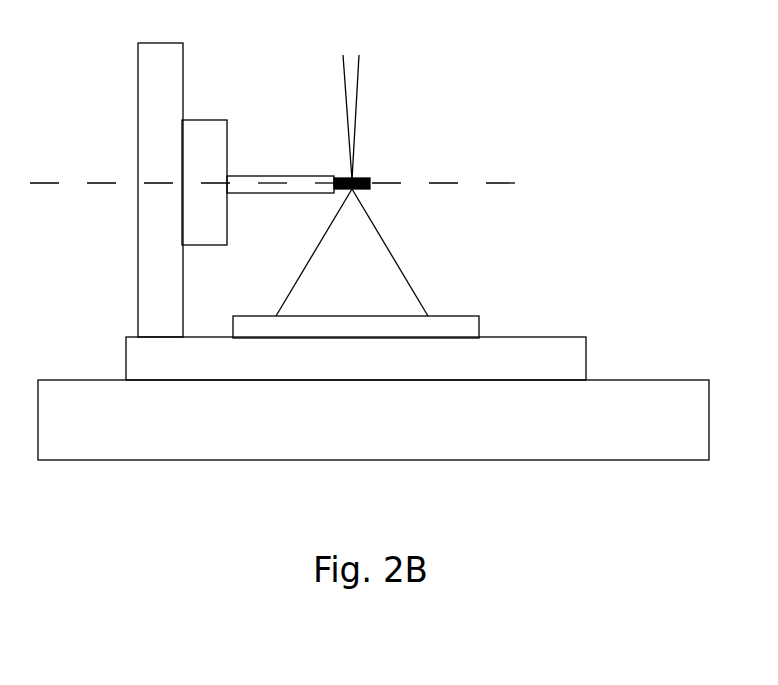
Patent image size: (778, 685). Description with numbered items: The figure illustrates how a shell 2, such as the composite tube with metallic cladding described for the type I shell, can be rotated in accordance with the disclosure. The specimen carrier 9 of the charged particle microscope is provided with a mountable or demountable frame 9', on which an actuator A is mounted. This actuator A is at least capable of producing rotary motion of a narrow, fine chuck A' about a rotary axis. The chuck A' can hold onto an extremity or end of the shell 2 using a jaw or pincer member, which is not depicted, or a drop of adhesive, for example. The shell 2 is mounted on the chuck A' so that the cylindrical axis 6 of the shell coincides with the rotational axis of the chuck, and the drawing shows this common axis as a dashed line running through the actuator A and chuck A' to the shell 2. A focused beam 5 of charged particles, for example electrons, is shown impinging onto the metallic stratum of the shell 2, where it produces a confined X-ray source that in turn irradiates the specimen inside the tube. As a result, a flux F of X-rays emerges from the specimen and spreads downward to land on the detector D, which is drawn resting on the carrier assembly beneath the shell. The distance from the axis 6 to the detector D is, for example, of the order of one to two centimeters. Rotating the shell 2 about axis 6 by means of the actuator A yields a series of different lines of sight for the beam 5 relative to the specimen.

The frame 9' is at (319, 211).
The specimen carrier 9 is at (373, 381).
The detector D is at (458, 321).
The actuator A is at (214, 152).
The chuck A' is at (280, 140).
The cylindrical axis 6 is at (495, 181).
The shell 2 is at (366, 178).
The focused beam of charged particles 5 is at (357, 91).
The flux of X-rays F is at (312, 255).